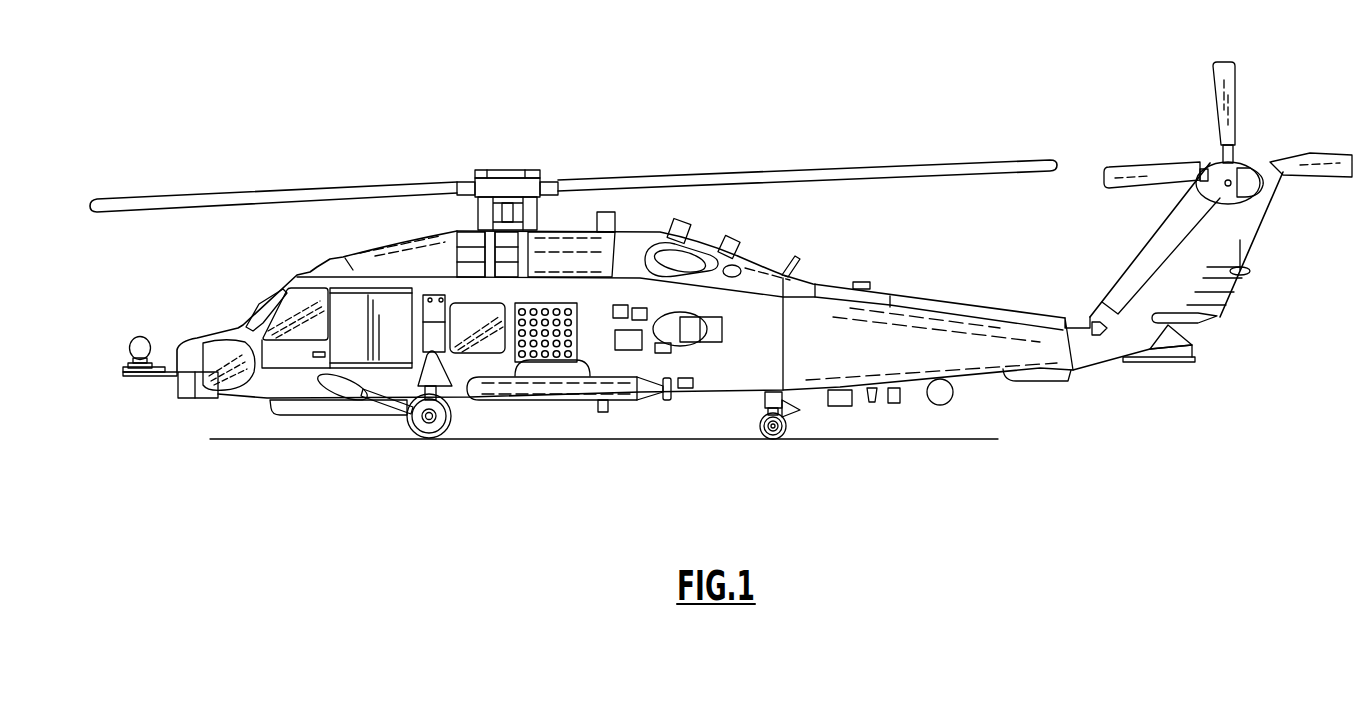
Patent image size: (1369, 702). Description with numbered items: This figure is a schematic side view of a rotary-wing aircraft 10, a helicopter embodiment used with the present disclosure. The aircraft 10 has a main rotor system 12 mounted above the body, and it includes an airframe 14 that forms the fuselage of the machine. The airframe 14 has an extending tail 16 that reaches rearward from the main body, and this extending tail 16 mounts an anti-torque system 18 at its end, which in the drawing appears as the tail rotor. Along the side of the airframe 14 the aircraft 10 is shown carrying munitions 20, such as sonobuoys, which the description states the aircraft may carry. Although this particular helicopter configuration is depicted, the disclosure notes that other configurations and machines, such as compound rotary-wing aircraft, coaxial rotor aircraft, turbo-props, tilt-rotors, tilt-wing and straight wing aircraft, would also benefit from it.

The rotary-wing aircraft 10 is at (941, 111).
The main rotor system 12 is at (598, 165).
The airframe 14 is at (723, 373).
The extending tail 16 is at (995, 353).
The anti-torque system 18 is at (1307, 180).
The munitions 20 is at (512, 348).